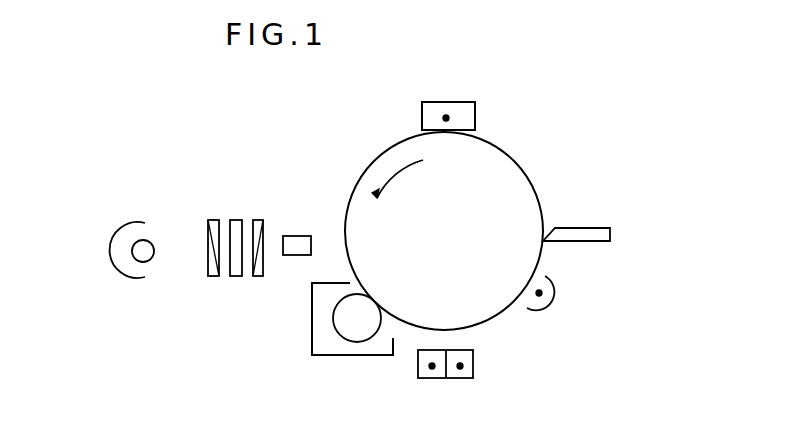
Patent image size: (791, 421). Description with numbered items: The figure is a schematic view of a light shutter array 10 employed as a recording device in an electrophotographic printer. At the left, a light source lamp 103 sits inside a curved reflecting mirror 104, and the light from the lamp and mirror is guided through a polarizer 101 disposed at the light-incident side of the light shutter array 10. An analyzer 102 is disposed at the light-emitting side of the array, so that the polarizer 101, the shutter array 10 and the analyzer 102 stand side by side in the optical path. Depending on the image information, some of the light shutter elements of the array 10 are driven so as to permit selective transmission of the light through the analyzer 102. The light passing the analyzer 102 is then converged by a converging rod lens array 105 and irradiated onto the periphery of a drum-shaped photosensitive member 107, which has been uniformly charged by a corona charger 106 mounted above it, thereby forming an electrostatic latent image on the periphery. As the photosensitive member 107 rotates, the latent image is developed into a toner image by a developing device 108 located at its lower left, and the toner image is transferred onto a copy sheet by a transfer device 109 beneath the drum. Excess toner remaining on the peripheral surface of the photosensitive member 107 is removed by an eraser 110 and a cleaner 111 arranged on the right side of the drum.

The light shutter array 10 is at (235, 218).
The polarizer 101 is at (213, 276).
The analyzer 102 is at (260, 278).
The light source lamp 103 is at (148, 240).
The reflecting mirror 104 is at (120, 268).
The converging rod lens array 105 is at (298, 236).
The corona charger 106 is at (475, 113).
The photosensitive member 107 is at (527, 175).
The developing device 108 is at (312, 340).
The transfer device 109 is at (473, 367).
The eraser 110 is at (555, 298).
The cleaner 111 is at (608, 227).